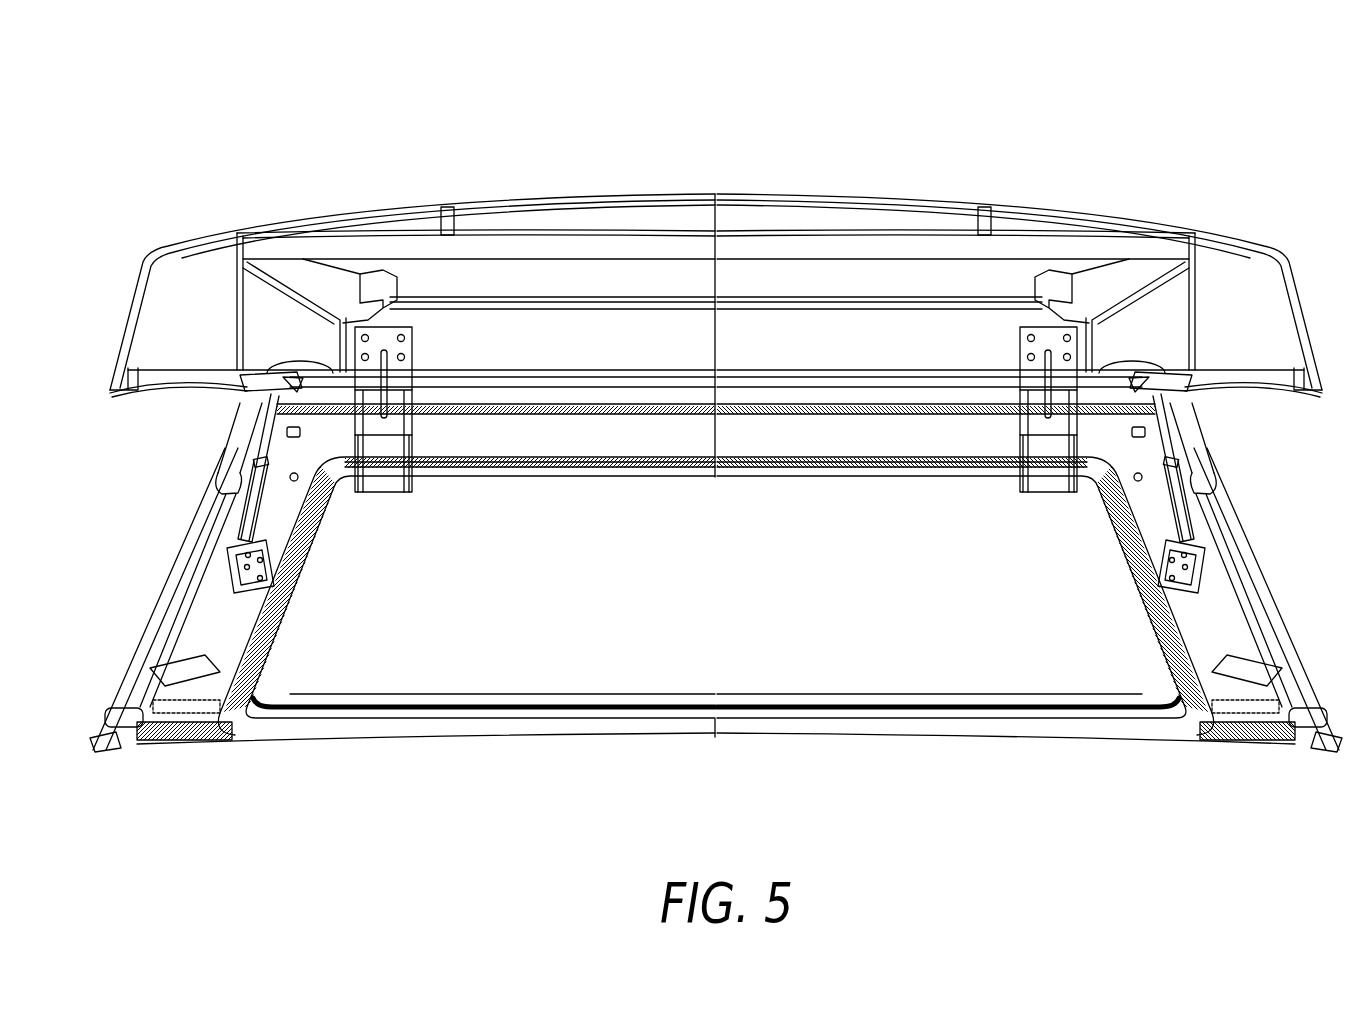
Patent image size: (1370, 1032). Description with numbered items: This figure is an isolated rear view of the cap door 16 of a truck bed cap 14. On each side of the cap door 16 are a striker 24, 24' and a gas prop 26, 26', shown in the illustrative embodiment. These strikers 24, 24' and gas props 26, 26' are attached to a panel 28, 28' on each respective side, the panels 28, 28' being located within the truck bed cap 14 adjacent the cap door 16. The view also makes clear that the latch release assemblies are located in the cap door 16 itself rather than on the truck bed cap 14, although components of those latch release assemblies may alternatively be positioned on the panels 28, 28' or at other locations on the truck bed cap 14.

The truck bed cap 14 is at (927, 772).
The cap door 16 is at (884, 150).
The striker 24 is at (162, 600).
The striker 24' is at (1273, 600).
The gas prop 26 is at (183, 565).
The gas prop 26' is at (1248, 565).
The panel 28 is at (186, 495).
The panel 28' is at (1250, 495).